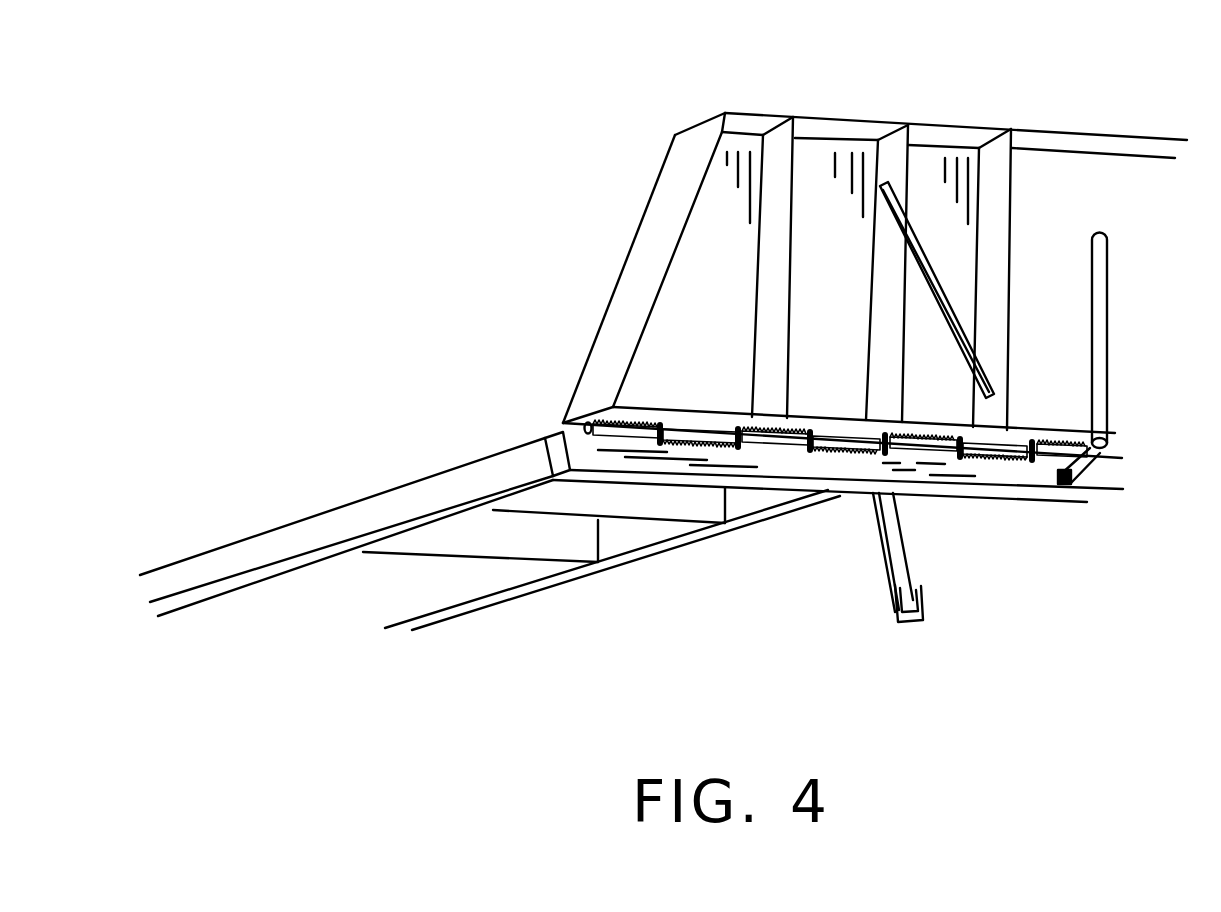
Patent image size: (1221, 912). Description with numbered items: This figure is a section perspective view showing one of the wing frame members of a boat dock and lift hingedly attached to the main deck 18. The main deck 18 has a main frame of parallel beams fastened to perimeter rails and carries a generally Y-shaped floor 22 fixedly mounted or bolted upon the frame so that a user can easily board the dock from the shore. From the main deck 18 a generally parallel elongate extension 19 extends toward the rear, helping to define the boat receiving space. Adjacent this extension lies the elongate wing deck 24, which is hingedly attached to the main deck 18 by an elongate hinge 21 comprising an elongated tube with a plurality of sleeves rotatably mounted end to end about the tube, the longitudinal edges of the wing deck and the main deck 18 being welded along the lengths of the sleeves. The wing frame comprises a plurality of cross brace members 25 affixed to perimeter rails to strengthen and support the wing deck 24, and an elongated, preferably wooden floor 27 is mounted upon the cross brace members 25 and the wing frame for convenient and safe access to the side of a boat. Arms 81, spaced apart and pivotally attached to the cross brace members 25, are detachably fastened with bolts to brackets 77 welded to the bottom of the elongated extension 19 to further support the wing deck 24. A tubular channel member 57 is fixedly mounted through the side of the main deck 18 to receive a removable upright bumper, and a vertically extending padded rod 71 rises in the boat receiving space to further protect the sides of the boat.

The main deck 18 is at (388, 503).
The elongate extension 19 is at (1003, 473).
The elongate hinge 21 is at (770, 442).
The Y-shaped floor 22 is at (390, 585).
The wing deck 24 is at (645, 257).
The cross brace members 25 is at (795, 170).
The wooden floor 27 is at (717, 208).
The tubular channel member 57 is at (1085, 487).
The padded rod 71 is at (1098, 298).
The bracket 77 is at (903, 538).
The arm 81 is at (947, 330).